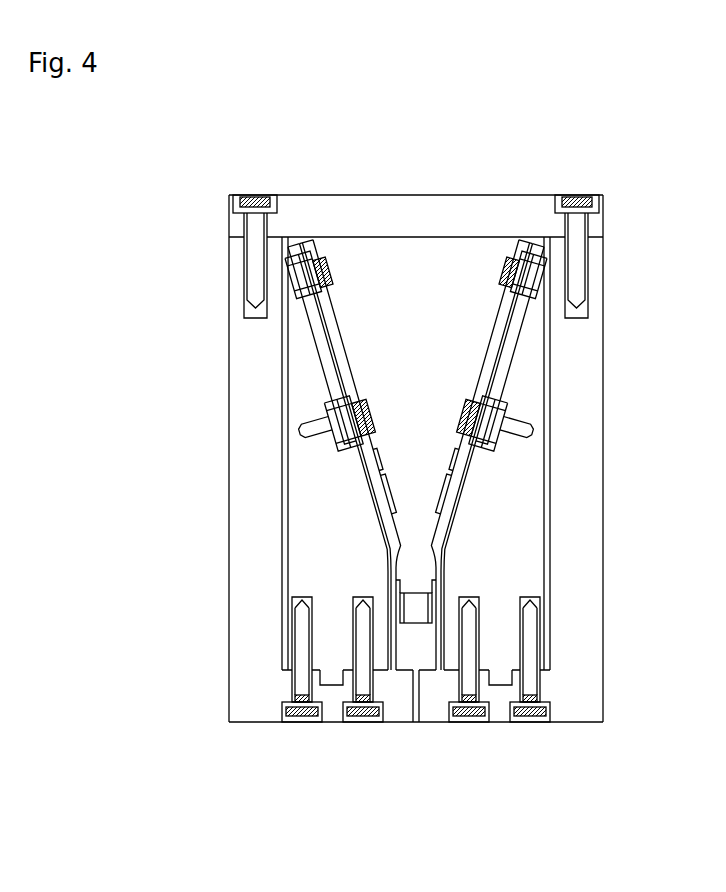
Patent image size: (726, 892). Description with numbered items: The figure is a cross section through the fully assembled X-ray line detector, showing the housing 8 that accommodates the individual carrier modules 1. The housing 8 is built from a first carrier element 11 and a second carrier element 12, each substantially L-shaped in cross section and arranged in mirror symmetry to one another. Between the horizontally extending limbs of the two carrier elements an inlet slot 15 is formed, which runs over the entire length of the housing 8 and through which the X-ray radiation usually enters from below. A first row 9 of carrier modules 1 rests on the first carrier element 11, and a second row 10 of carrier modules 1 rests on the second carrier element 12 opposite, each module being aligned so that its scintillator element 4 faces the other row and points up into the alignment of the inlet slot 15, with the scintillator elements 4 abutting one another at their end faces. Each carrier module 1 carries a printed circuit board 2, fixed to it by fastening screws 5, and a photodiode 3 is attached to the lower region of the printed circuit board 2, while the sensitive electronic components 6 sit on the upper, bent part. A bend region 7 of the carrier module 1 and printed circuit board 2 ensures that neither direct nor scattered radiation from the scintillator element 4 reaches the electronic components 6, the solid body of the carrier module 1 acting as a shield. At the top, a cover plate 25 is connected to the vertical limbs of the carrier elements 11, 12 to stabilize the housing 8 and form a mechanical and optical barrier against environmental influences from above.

The carrier module 1 is at (316, 482).
The printed circuit board 2 is at (487, 345).
The photodiode 3 is at (436, 607).
The scintillator element 4 is at (418, 603).
The fastening screw 5 is at (506, 262).
The electronic component 6 is at (458, 455).
The bend region 7 is at (384, 555).
The housing 8 is at (229, 357).
The first row 9 is at (532, 372).
The second row 10 is at (318, 521).
The first carrier element 11 is at (578, 423).
The second carrier element 12 is at (262, 633).
The inlet slot 15 is at (417, 723).
The cover plate 25 is at (522, 215).